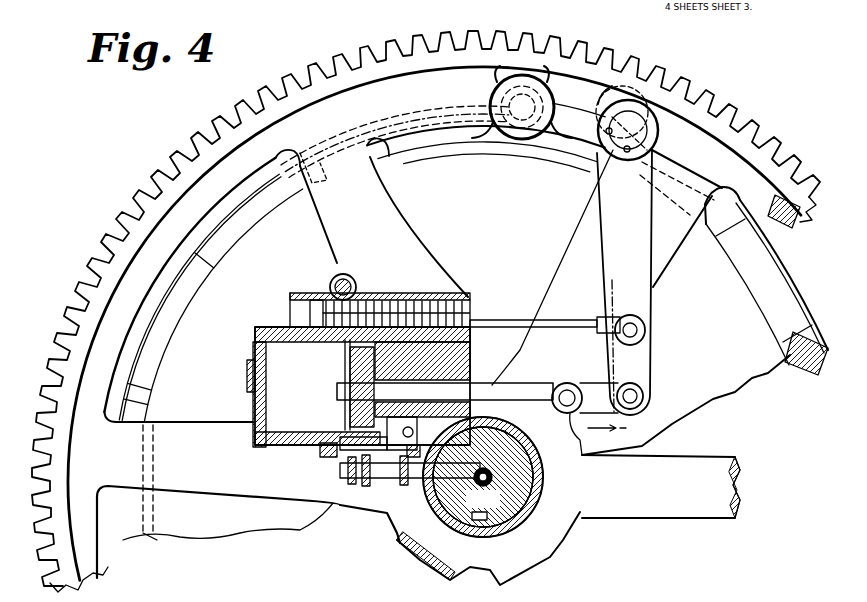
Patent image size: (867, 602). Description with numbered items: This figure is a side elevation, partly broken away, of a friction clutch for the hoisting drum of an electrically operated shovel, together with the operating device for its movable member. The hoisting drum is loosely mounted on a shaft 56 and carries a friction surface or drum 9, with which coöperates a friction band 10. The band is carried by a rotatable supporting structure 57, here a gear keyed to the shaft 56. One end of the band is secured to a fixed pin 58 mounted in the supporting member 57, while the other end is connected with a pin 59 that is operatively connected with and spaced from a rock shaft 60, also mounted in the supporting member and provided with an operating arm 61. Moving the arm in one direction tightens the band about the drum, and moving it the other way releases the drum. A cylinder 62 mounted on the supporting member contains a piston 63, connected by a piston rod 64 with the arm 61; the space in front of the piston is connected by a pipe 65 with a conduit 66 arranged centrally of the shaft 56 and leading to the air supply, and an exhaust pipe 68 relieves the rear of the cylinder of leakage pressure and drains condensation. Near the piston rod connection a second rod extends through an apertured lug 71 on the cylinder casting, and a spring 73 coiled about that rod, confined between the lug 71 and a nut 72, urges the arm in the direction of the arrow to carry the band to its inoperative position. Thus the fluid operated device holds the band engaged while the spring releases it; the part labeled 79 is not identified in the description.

The friction surface or drum 9 is at (284, 205).
The friction band 10 is at (247, 283).
The shaft 56 is at (545, 484).
The rotatable supporting structure 57 is at (117, 462).
The fixed pin 58 is at (522, 140).
The pin 59 is at (645, 90).
The rock shaft 60 is at (603, 157).
The operating arm 61 is at (612, 205).
The cylinder 62 is at (256, 428).
The piston 63 is at (348, 375).
The piston rod 64 is at (512, 395).
The pipe 65 is at (380, 472).
The conduit 66 is at (483, 477).
The exhaust pipe 68 is at (418, 497).
The apertured lug 71 is at (478, 298).
The nut 72 is at (323, 303).
The spring 73 is at (395, 300).
The spring rod 79 is at (517, 321).